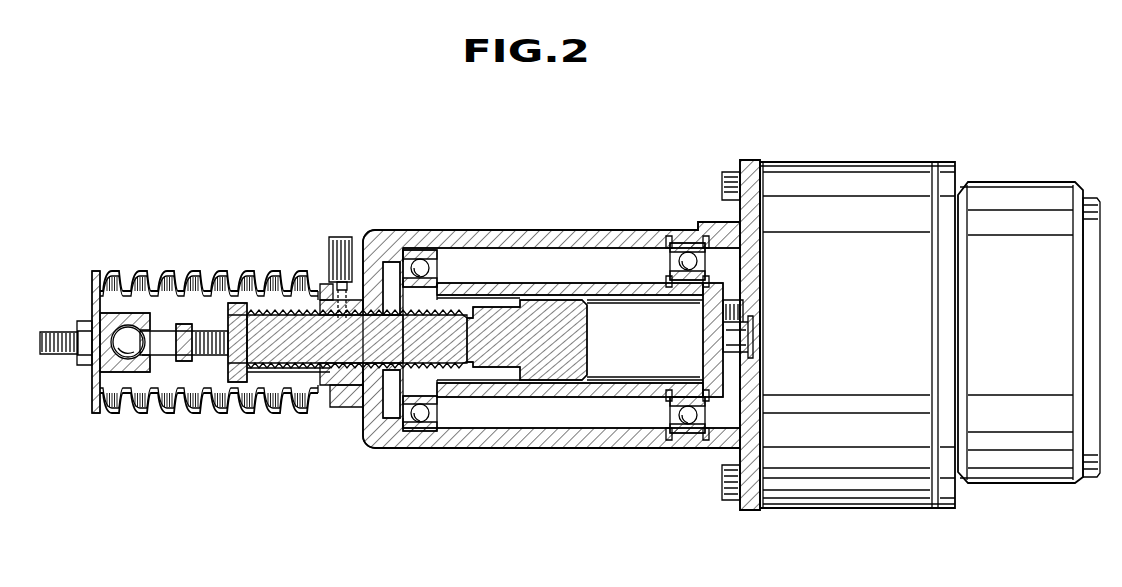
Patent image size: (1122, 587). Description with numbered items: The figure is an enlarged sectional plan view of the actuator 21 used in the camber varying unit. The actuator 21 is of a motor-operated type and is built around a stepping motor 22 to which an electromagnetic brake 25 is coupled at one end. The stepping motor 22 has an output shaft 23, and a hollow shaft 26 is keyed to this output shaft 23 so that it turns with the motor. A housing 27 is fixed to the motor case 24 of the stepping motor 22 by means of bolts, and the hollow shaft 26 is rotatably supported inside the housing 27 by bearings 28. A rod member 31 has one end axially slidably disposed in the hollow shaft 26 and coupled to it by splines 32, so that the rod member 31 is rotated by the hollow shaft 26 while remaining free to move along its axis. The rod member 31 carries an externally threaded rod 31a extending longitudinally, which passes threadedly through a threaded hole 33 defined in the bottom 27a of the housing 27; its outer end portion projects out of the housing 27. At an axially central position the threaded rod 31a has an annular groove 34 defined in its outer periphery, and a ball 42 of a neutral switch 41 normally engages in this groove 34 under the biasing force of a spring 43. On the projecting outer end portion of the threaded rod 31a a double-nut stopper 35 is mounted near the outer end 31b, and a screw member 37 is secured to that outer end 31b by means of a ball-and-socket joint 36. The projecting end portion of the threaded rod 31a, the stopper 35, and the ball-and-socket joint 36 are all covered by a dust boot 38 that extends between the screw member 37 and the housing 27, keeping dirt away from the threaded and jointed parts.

The actuator 21 is at (846, 126).
The stepping motor 22 is at (898, 158).
The output shaft 23 is at (703, 340).
The motor case 24 is at (850, 492).
The electromagnetic brake 25 is at (1037, 200).
The hollow shaft 26 is at (490, 285).
The housing 27 is at (593, 232).
The bottom of the housing 27a is at (332, 410).
The bearings 28 is at (685, 240).
The rod member 31 is at (556, 328).
The externally threaded rod 31a is at (292, 382).
The outer end of the threaded rod 31b is at (210, 382).
The splines 32 is at (568, 384).
The threaded hole 33 is at (348, 400).
The annular groove 34 is at (348, 326).
The double-nut stopper 35 is at (233, 392).
The ball-and-socket joint 36 is at (128, 332).
The screw member 37 is at (60, 334).
The dust boot 38 is at (166, 402).
The neutral switch 41 is at (342, 246).
The ball 42 is at (326, 290).
The spring 43 is at (340, 284).